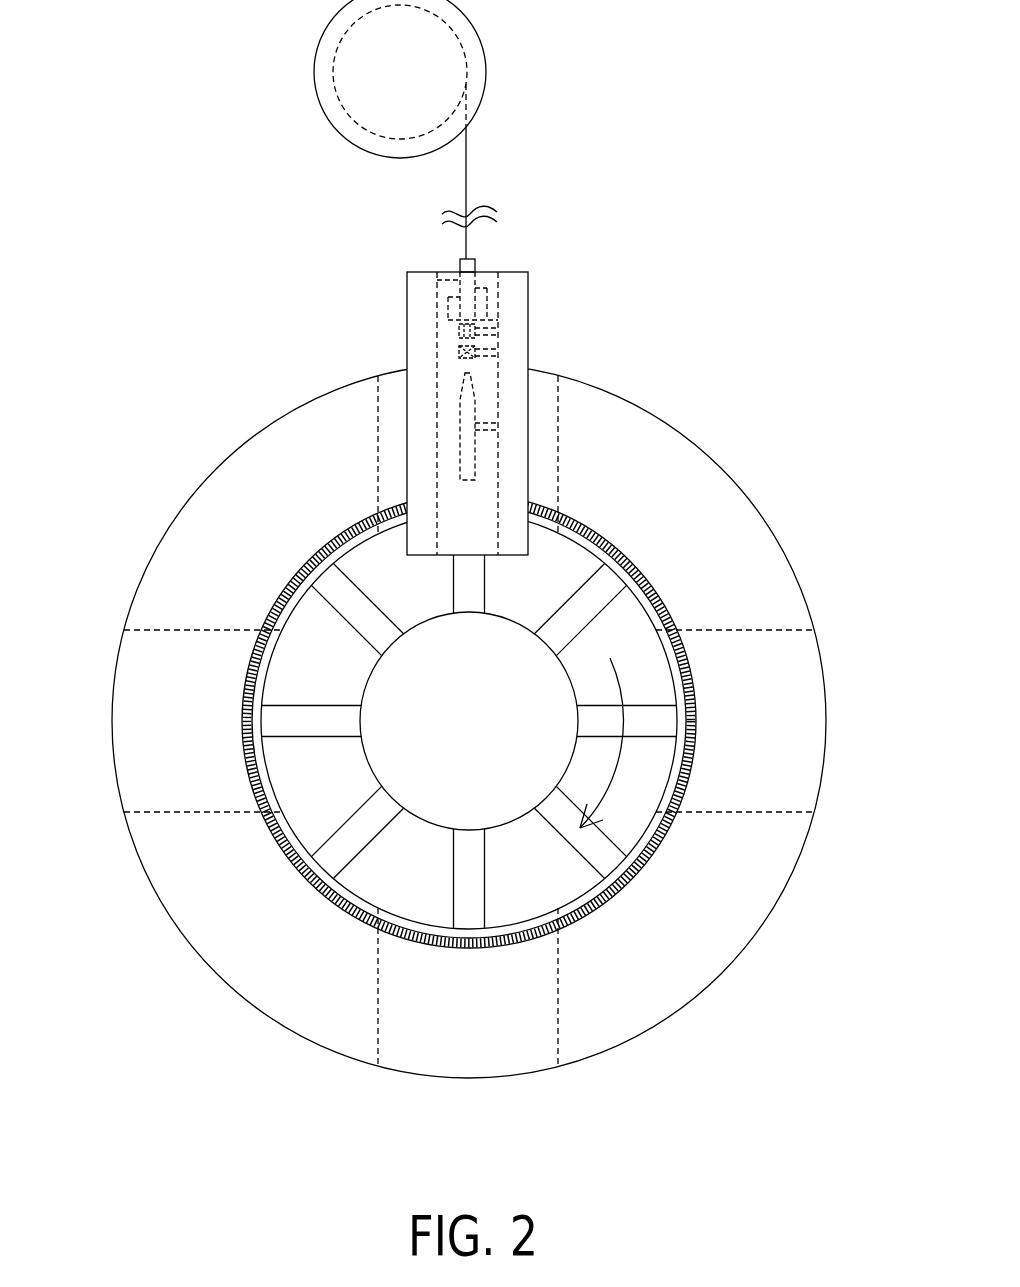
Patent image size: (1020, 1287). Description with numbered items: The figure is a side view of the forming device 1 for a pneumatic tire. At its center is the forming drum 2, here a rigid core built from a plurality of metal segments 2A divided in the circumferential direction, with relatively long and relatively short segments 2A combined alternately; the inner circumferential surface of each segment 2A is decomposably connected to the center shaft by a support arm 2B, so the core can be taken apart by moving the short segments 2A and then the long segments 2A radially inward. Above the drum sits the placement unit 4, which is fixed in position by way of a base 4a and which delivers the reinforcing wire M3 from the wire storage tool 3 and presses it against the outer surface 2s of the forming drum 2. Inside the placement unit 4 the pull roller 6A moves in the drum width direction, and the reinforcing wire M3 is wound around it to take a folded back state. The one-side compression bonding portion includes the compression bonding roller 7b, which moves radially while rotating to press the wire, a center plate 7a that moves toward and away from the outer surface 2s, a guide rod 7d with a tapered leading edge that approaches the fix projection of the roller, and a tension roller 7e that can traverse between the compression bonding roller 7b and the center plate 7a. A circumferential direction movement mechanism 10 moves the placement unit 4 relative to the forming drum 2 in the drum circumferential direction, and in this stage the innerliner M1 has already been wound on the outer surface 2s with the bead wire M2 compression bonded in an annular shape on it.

The forming device 1 is at (648, 136).
The forming drum 2 is at (576, 533).
The segment 2A is at (185, 530).
The support arm 2B is at (465, 850).
The outer surface 2s is at (295, 420).
The wire storage tool 3 is at (343, 90).
The placement unit 4 is at (530, 218).
The base 4a is at (518, 338).
The pull roller 6A is at (459, 330).
The center plate 7a is at (482, 300).
The compression bonding roller 7b is at (460, 263).
The guide rod 7d is at (460, 425).
The tension roller 7e is at (459, 350).
The circumferential direction movement mechanism 10 is at (390, 690).
The innerliner M1 is at (252, 455).
The bead wire M2 is at (288, 583).
The reinforcing wire M3 is at (466, 185).